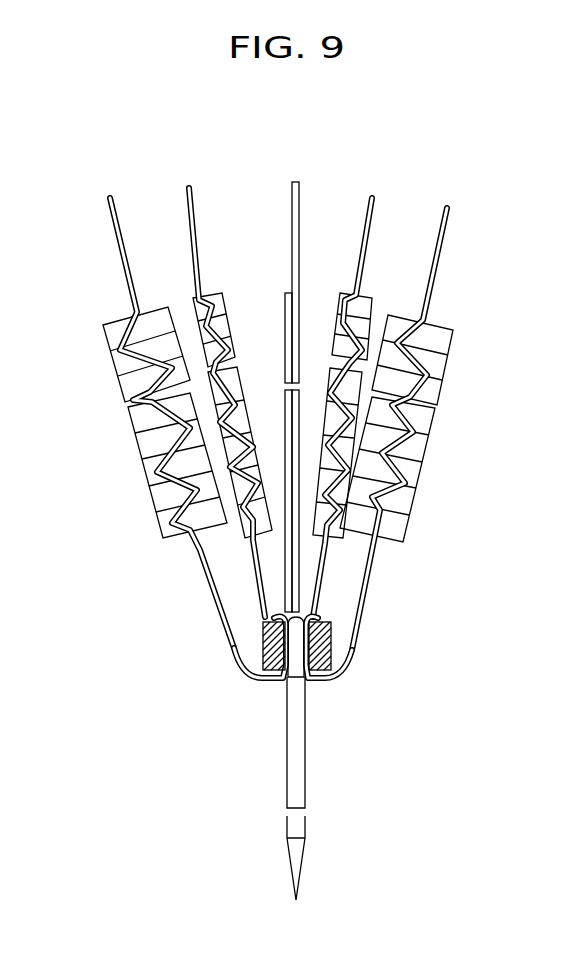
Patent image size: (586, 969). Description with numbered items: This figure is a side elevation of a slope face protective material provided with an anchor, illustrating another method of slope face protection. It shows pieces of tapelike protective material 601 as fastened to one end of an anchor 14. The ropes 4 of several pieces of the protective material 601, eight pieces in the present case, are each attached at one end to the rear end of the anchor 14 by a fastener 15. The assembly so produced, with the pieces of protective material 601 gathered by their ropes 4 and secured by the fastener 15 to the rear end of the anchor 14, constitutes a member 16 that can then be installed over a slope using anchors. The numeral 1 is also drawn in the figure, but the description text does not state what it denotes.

The resistor element 1 is at (112, 358).
The lead wire 4 is at (118, 259).
The center pin 14 is at (307, 768).
The contact sleeve 15 is at (332, 648).
The U-shaped bend 16 is at (221, 696).
The lead wire assembly 601 is at (310, 377).